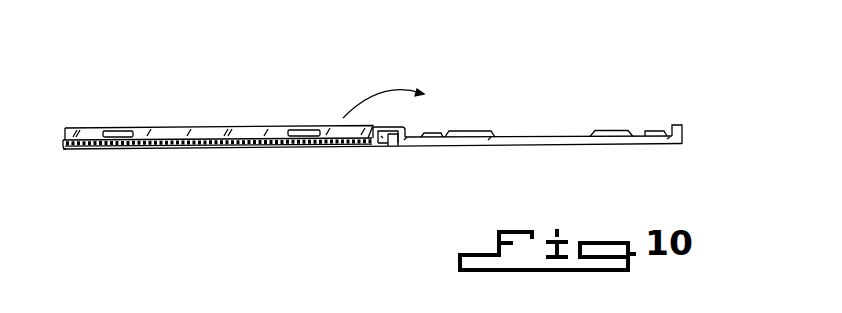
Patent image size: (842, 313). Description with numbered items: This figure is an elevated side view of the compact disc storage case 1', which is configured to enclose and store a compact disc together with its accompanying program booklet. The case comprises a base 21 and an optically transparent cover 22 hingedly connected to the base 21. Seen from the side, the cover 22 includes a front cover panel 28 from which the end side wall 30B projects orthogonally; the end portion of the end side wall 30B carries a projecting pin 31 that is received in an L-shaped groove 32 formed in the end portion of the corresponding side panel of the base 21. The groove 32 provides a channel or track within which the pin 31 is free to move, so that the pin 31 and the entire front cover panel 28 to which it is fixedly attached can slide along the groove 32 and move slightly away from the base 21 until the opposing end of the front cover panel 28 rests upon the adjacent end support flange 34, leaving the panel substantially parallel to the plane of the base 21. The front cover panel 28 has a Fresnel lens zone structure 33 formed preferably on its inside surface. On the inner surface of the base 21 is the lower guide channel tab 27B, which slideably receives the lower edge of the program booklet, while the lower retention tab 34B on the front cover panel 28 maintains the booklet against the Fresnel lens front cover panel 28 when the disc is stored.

The lower retention tab 34B is at (104, 128).
The end side wall 30B is at (179, 131).
The lower guide channel tab 27B is at (444, 132).
The compact disc storage case 1' is at (464, 81).
The end support flange 34 is at (683, 126).
The front cover panel 28 is at (121, 151).
The Fresnel lens zone structure 33 is at (220, 149).
The optically transparent cover 22 is at (372, 139).
The projecting pin 31 is at (378, 147).
The L-shaped groove 32 is at (389, 147).
The base 21 is at (575, 147).